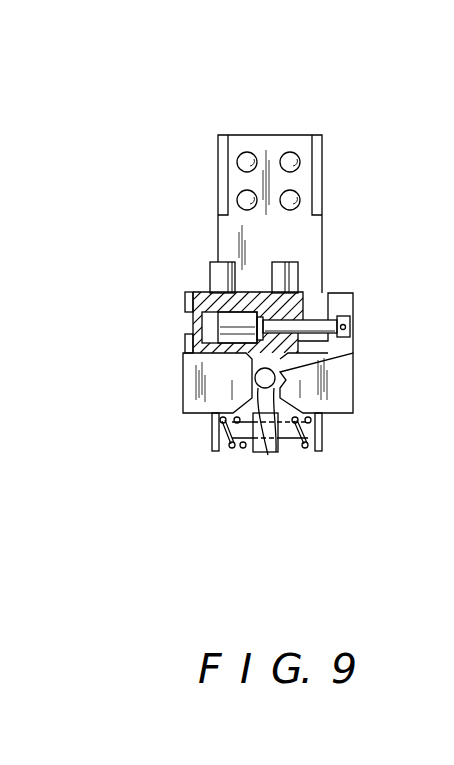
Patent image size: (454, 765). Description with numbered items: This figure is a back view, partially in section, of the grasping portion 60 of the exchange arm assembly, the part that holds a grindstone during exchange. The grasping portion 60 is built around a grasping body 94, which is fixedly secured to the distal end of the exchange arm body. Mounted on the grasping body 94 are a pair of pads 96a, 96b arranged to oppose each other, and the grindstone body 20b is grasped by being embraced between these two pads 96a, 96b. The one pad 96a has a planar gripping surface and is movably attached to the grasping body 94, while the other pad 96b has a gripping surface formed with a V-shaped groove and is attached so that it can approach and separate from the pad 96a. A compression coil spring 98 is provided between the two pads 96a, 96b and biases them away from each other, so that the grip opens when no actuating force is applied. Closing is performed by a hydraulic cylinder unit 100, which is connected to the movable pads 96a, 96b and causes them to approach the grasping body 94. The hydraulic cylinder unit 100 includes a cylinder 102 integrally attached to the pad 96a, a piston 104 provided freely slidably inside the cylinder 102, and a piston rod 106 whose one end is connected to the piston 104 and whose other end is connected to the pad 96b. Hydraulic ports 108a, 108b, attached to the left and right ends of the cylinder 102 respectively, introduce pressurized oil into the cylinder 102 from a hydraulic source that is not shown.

The grasping portion 60 is at (338, 190).
The grasping body 94 is at (262, 143).
The hydraulic port 108a is at (213, 262).
The hydraulic port 108b is at (290, 263).
The hydraulic cylinder unit 100 is at (195, 280).
The cylinder 102 is at (207, 330).
The piston 104 is at (210, 322).
The piston rod 106 is at (313, 306).
The pad 96a is at (212, 390).
The pad 96b is at (338, 393).
The compression coil spring 98 is at (245, 447).
The grindstone body 20b is at (267, 457).